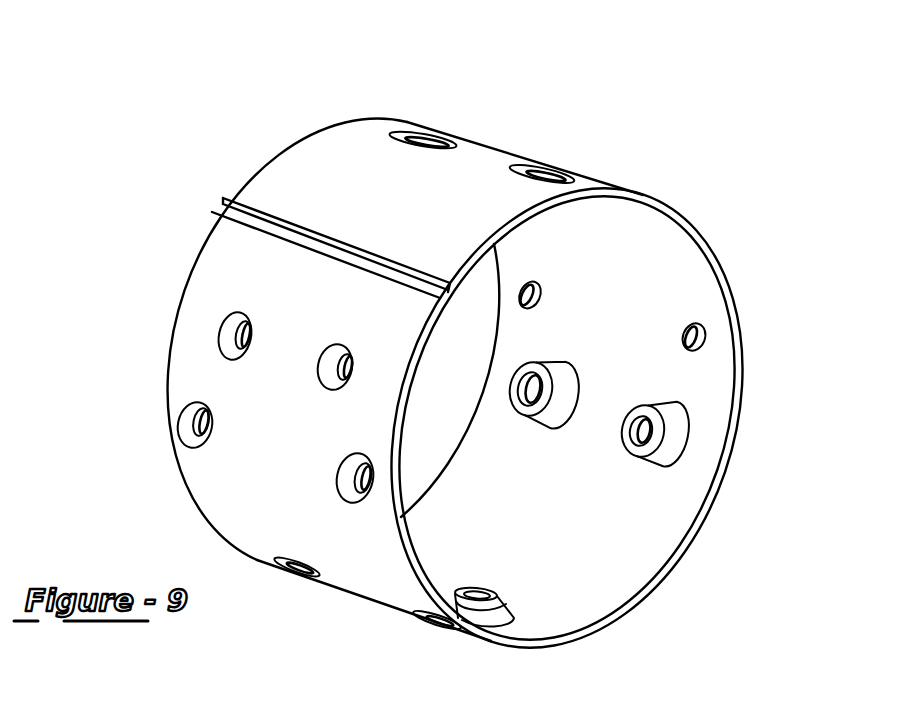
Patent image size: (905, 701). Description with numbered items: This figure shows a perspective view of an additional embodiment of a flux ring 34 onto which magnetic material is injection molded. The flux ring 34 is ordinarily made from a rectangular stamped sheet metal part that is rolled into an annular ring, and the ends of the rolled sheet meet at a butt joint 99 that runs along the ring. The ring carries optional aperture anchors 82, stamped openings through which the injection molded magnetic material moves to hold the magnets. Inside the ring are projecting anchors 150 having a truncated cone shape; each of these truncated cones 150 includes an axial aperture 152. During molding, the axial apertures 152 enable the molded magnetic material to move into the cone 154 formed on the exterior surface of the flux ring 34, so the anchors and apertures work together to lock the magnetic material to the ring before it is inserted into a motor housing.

The flux ring 34 is at (240, 118).
The butt joint 99 is at (216, 204).
The cone 154 is at (231, 327).
The aperture anchors 82 is at (182, 444).
The projecting anchors 150 is at (556, 367).
The axial apertures 152 is at (655, 448).